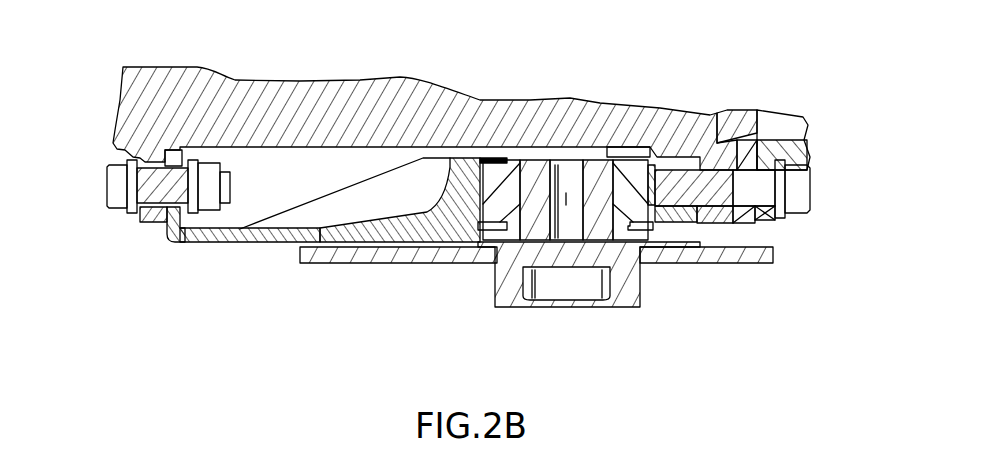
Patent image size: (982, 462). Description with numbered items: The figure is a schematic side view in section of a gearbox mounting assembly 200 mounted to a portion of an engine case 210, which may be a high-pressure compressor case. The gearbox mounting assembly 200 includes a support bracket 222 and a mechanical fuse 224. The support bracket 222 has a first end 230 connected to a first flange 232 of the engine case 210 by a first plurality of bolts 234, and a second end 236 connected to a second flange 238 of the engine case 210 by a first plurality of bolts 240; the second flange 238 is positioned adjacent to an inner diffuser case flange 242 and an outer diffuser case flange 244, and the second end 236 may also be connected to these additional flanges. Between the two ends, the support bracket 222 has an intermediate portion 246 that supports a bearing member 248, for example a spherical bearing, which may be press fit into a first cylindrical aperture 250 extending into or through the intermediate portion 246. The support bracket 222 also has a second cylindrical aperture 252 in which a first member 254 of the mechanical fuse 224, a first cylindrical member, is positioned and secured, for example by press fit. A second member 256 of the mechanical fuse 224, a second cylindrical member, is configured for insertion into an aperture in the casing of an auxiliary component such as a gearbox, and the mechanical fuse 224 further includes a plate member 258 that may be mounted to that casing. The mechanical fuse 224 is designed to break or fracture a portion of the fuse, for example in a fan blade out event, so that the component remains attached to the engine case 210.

The gearbox mounting assembly 200 is at (86, 62).
The engine case 210 is at (413, 78).
The support bracket 222 is at (190, 243).
The mechanical fuse 224 is at (625, 290).
The first end 230 is at (177, 237).
The first flange 232 is at (147, 222).
The first plurality of bolts 234 is at (117, 176).
The second end 236 is at (670, 217).
The second flange 238 is at (713, 215).
The first plurality of bolts 240 is at (803, 185).
The inner diffuser case flange 242 is at (743, 150).
The outer diffuser case flange 244 is at (777, 143).
The intermediate portion 246 is at (443, 205).
The bearing member 248 is at (495, 172).
The first cylindrical aperture 250 is at (490, 160).
The second cylindrical aperture 252 is at (534, 167).
The first member 254 is at (597, 172).
The second member 256 is at (512, 290).
The plate member 258 is at (333, 258).